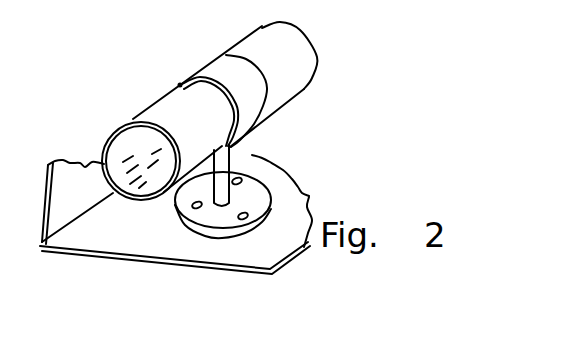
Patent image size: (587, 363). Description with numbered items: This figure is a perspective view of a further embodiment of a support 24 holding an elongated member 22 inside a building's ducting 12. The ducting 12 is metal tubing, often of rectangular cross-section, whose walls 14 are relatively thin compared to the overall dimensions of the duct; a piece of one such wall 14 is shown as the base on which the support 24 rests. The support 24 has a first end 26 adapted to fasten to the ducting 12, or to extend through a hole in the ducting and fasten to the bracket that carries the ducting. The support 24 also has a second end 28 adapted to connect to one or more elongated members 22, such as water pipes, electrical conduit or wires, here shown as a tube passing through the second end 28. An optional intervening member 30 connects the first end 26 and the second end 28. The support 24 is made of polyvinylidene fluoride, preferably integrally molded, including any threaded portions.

The ducting 12 is at (176, 239).
The walls 14 is at (112, 264).
The elongated member 22 is at (133, 119).
The support 24 is at (249, 146).
The first end 26 is at (273, 204).
The second end 28 is at (203, 65).
The intervening member 30 is at (236, 157).